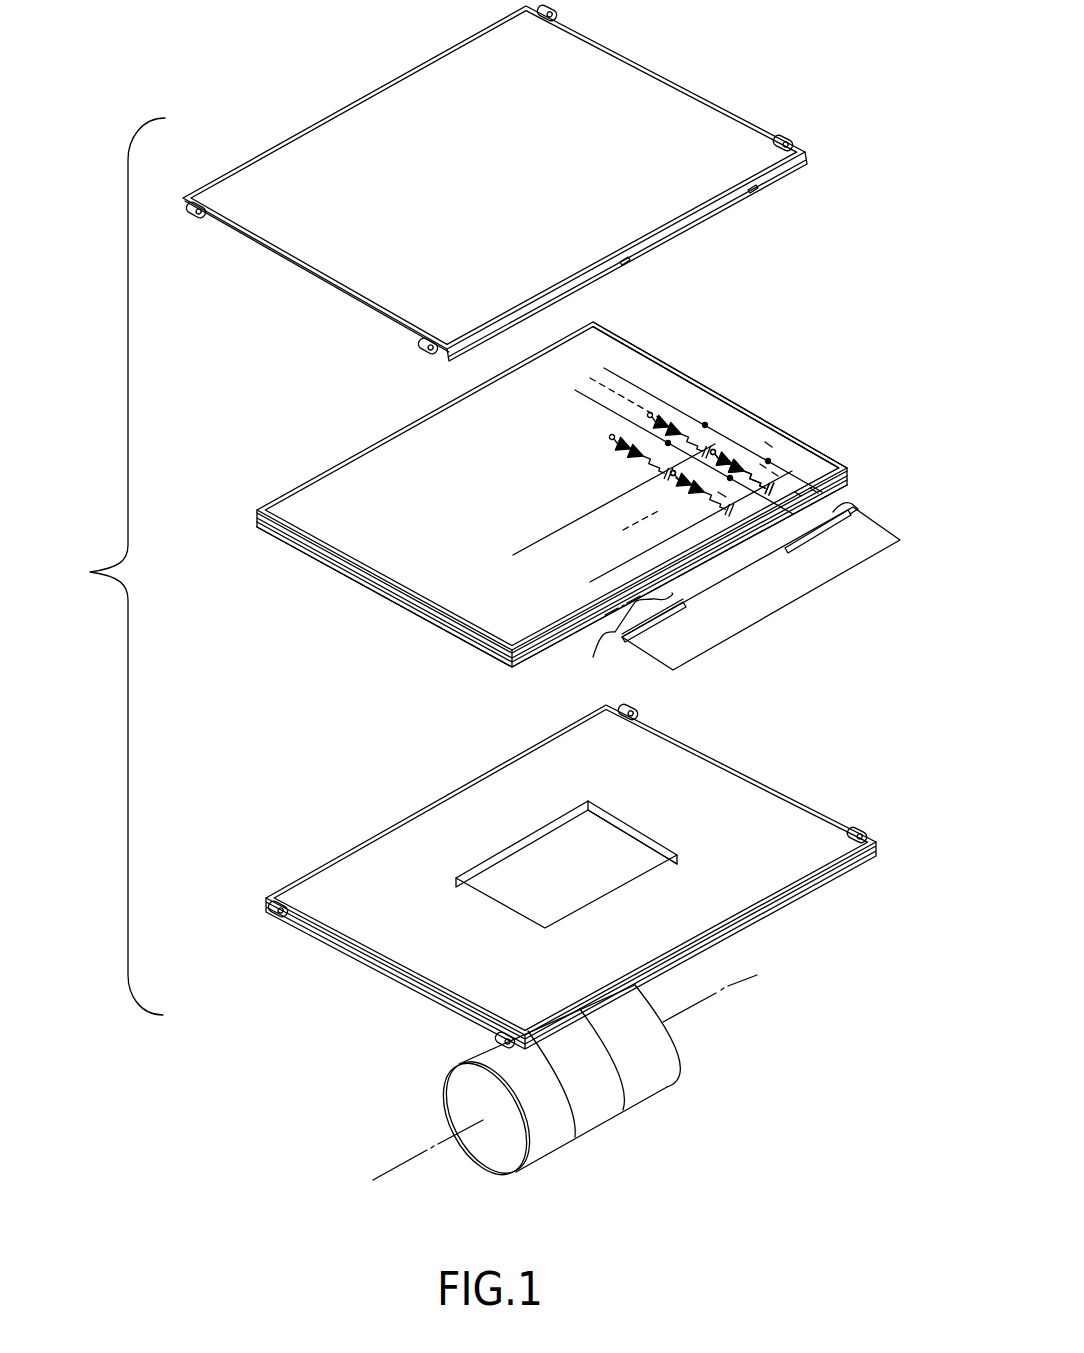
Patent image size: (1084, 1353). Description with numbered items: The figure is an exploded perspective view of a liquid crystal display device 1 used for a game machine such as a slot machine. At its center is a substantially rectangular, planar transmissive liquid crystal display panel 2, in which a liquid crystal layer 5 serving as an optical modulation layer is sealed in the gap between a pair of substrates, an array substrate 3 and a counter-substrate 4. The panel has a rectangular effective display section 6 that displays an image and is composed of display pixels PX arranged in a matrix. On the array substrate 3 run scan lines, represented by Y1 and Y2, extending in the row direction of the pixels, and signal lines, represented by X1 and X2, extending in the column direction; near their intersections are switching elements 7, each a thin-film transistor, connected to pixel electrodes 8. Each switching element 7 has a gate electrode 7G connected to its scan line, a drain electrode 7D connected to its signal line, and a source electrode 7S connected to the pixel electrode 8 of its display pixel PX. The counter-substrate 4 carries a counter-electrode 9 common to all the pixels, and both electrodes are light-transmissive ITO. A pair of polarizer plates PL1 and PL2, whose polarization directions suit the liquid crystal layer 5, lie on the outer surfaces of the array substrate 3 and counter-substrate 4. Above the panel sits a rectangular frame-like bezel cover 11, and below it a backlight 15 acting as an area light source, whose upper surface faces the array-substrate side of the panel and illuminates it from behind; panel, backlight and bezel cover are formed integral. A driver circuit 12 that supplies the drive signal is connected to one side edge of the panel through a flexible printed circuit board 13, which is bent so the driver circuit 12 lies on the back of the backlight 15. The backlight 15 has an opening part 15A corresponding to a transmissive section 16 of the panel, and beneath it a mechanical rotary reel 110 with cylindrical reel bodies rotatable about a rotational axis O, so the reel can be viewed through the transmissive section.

The liquid crystal display device 1 is at (117, 566).
The liquid crystal display panel 2 is at (694, 374).
The array substrate 3 is at (815, 490).
The counter-substrate 4 is at (770, 445).
The liquid crystal layer 5 is at (680, 482).
The effective display section 6 is at (622, 372).
The switching element 7 is at (752, 478).
The drain electrode 7D is at (770, 462).
The gate electrode 7G is at (777, 470).
The source electrode 7S is at (810, 498).
The pixel electrode 8 is at (722, 497).
The counter-electrode 9 is at (676, 478).
The display pixel PX is at (677, 402).
The signal line X1 is at (612, 371).
The signal line X2 is at (593, 406).
The scan line Y1 is at (590, 577).
The scan line Y2 is at (538, 538).
The polarizer plate PL1 is at (294, 549).
The polarizer plate PL2 is at (296, 503).
The bezel cover 11 is at (697, 84).
The driver circuit 12 is at (890, 532).
The flexible printed circuit board 13 is at (608, 632).
The backlight 15 is at (766, 753).
The opening part 15A is at (545, 864).
The transmissive section 16 is at (500, 914).
The rotary reel 110 is at (693, 1063).
The rotational axis O is at (392, 1168).